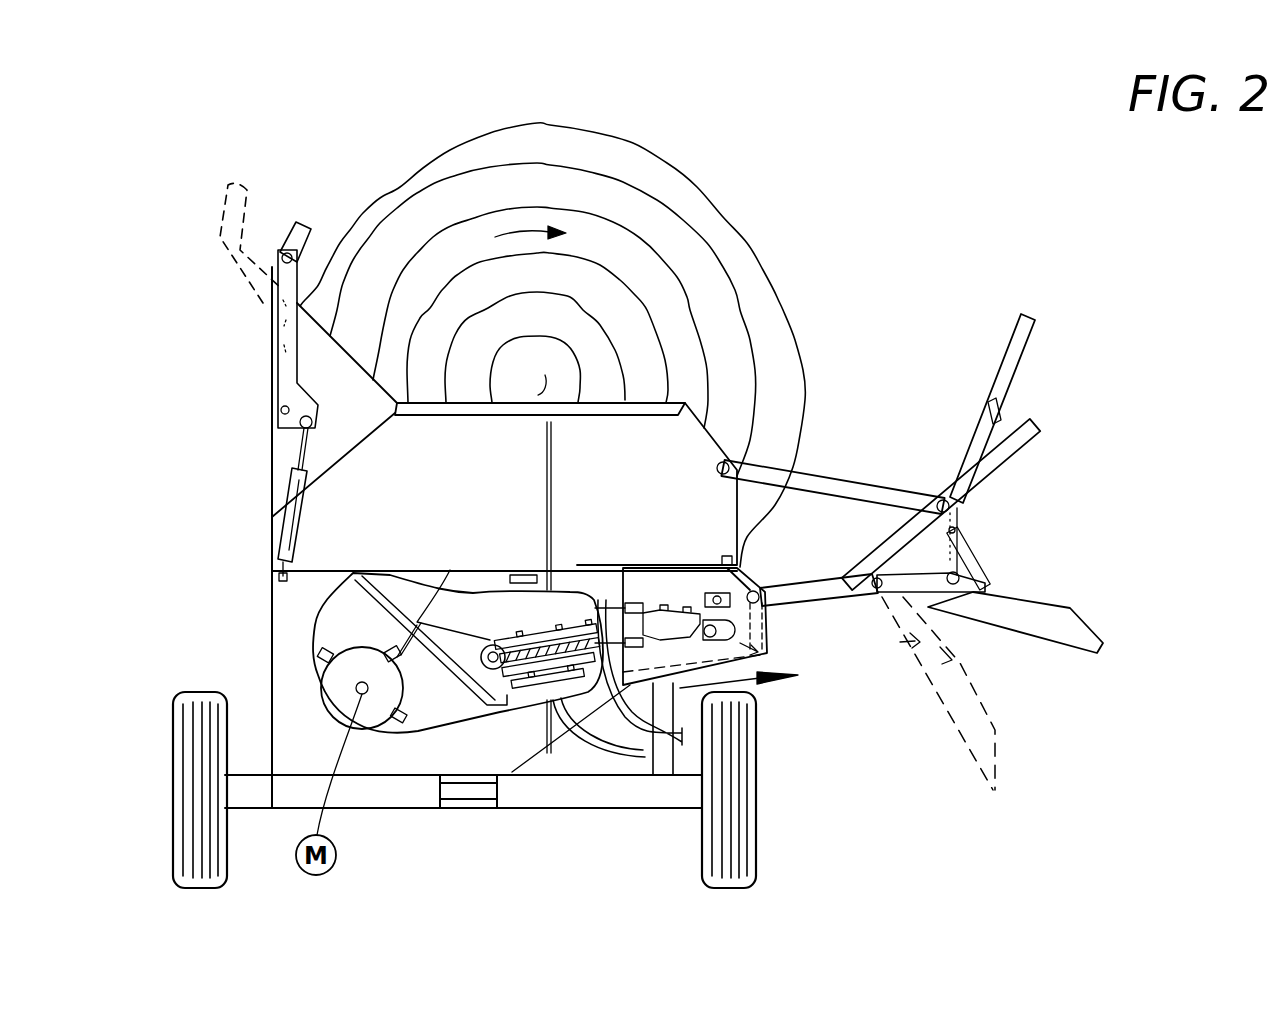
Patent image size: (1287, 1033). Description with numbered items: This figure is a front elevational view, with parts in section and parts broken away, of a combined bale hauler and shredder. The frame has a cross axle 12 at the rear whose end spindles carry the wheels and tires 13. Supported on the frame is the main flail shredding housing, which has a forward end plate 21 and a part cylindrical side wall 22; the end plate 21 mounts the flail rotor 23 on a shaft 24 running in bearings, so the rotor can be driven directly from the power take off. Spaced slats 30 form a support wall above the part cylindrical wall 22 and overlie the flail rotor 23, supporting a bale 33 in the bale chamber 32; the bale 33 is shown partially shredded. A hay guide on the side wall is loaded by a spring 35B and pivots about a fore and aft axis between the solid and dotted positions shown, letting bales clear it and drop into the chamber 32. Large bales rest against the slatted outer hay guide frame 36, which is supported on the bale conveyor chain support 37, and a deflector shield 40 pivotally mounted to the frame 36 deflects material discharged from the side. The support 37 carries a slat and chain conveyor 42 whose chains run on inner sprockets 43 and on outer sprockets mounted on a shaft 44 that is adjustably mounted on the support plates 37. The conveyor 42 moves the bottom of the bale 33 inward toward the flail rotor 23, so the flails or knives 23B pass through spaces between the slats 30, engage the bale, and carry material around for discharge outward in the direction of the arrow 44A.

The cross axle 12 is at (557, 798).
The wheels and tires 13 is at (175, 820).
The forward end plate 21 is at (287, 613).
The part cylindrical side wall 22 is at (680, 428).
The flail rotor 23 is at (340, 678).
The flails or knives 23B is at (435, 598).
The shaft 24 is at (387, 650).
The spaced slats 30 is at (380, 593).
The bale chamber 32 is at (672, 240).
The bale 33 is at (541, 185).
The spring 35B is at (300, 530).
The outer hay guide frame 36 is at (1008, 339).
The bale conveyor chain support 37 is at (765, 655).
The deflector shield 40 is at (1043, 613).
The slat and chain conveyor 42 is at (598, 600).
The inner sprockets 43 is at (490, 637).
The shaft 44 is at (765, 625).
The arrow 44A is at (757, 683).